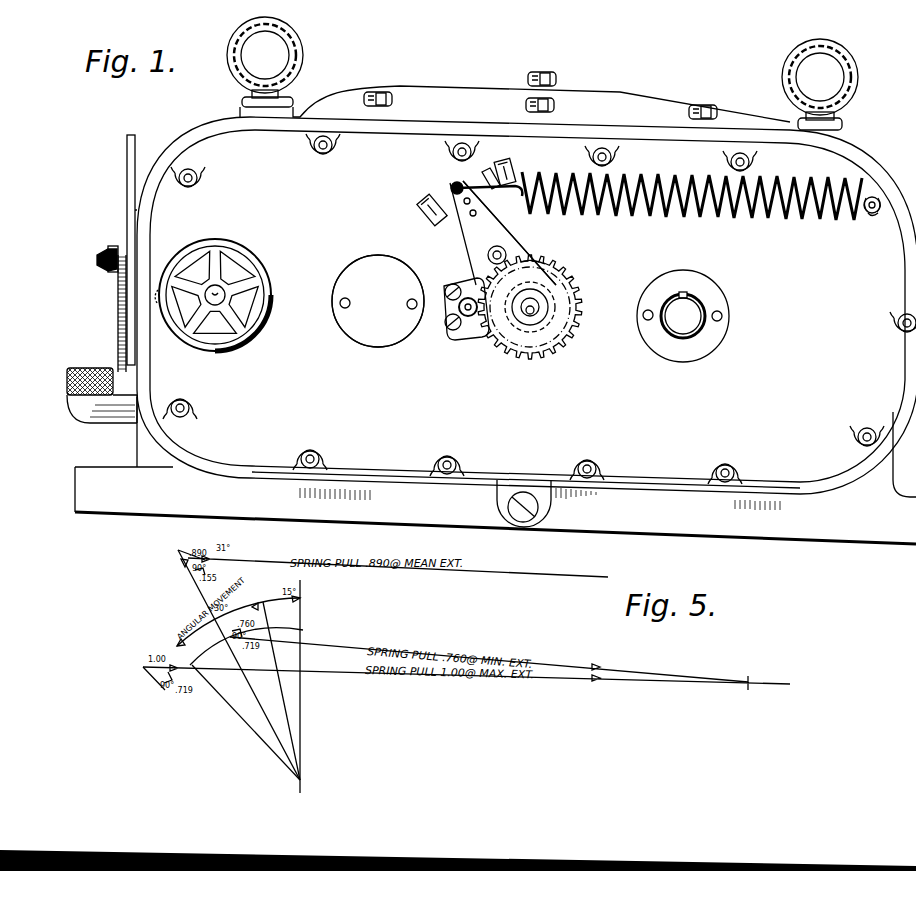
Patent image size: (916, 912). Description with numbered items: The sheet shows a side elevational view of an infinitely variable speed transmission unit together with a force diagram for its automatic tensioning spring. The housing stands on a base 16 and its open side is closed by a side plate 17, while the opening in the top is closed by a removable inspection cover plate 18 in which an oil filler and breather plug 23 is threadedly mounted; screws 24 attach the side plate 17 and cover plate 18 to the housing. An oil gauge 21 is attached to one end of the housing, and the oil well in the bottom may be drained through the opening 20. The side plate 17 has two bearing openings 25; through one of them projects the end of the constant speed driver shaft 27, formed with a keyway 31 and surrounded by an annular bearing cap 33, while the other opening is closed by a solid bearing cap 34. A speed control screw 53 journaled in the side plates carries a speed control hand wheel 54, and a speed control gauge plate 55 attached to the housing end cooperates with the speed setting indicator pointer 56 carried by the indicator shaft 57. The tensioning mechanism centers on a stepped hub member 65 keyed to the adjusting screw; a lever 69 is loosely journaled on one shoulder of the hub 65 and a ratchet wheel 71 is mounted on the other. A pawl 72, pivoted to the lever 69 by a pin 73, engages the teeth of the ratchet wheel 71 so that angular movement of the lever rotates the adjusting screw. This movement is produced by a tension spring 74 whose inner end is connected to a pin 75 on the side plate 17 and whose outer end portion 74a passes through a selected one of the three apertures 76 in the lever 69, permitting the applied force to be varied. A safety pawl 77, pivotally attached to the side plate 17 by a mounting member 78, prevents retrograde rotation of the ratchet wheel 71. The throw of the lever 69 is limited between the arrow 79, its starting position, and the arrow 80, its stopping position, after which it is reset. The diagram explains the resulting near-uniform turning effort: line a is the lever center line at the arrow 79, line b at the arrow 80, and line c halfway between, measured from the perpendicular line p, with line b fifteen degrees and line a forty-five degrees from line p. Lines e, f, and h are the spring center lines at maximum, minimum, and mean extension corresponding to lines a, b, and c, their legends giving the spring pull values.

In FIG. 1, the base 16 is at (866, 550).
In FIG. 1, the side plate 17 is at (780, 374).
In FIG. 1, the inspection cover plate 18 is at (630, 95).
In FIG. 1, the opening 20 is at (540, 504).
In FIG. 1, the oil gauge 21 is at (76, 425).
In FIG. 1, the oil filler and breather plug 23 is at (528, 80).
In FIG. 1, the screws 24 is at (378, 92).
In FIG. 1, the bearing opening 25 is at (372, 258).
In FIG. 1, the constant speed driver shaft 27 is at (684, 332).
In FIG. 1, the keyway 31 is at (687, 294).
In FIG. 1, the annular bearing cap 33 is at (728, 304).
In FIG. 1, the solid bearing cap 34 is at (376, 348).
In FIG. 1, the speed control screw 53 is at (225, 296).
In FIG. 1, the speed control hand wheel 54 is at (225, 258).
In FIG. 1, the speed control gauge plate 55 is at (127, 180).
In FIG. 1, the speed setting indicator pointer 56 is at (117, 298).
In FIG. 1, the indicator shaft 57 is at (120, 250).
In FIG. 1, the hub member 65 is at (552, 306).
In FIG. 1, the lever 69 is at (512, 245).
In FIG. 1, the ratchet wheel 71 is at (566, 342).
In FIG. 1, the pawl 72 is at (546, 263).
In FIG. 1, the pin 73 is at (494, 250).
In FIG. 1, the tension spring 74 is at (650, 180).
In FIG. 1, the spring end portion 74a is at (484, 182).
In FIG. 1, the pin 75 is at (877, 215).
In FIG. 1, the apertures 76 is at (472, 203).
In FIG. 1, the safety pawl 77 is at (452, 283).
In FIG. 1, the mounting member 78 is at (455, 332).
In FIG. 1, the arrow 79 is at (423, 196).
In FIG. 1, the arrow 80 is at (508, 168).
In FIG. 5, the line a is at (233, 716).
In FIG. 5, the line b is at (279, 696).
In FIG. 5, the line c is at (262, 705).
In FIG. 5, the line p is at (303, 698).
In FIG. 5, the line e is at (569, 685).
In FIG. 5, the line f is at (585, 662).
In FIG. 5, the line h is at (451, 578).